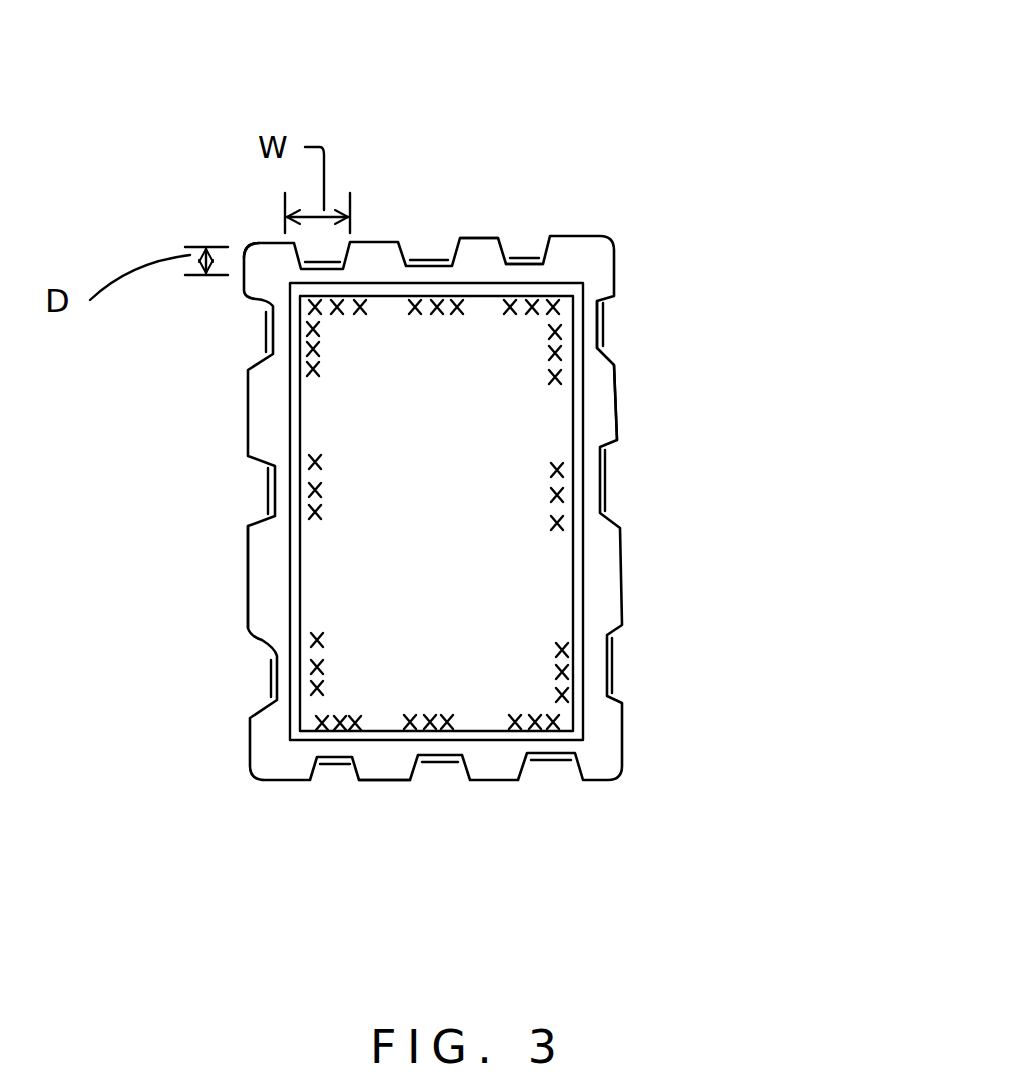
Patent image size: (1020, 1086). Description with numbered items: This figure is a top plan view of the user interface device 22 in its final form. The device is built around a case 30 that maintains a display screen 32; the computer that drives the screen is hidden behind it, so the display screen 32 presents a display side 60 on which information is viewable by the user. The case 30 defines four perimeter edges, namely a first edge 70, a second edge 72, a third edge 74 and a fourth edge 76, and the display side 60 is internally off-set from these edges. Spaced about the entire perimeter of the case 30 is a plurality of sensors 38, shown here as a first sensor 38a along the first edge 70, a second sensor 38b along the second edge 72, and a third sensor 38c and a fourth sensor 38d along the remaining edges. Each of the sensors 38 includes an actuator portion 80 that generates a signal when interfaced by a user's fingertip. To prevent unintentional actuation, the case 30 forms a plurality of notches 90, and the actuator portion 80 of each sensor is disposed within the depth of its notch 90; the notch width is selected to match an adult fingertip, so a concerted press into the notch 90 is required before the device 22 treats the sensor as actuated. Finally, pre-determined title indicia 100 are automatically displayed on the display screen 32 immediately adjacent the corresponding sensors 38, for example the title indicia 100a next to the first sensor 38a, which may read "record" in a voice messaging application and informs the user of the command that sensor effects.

The user interface device 22 is at (462, 27).
The case 30 is at (628, 266).
The display screen 32 is at (480, 497).
The sensors 38 is at (528, 207).
The first sensor 38a is at (478, 163).
The second sensor 38b is at (618, 487).
The third sensor 38c is at (432, 783).
The fourth sensor 38d is at (252, 492).
The display side 60 is at (473, 625).
The first edge 70 is at (478, 228).
The second edge 72 is at (625, 385).
The third edge 74 is at (381, 790).
The fourth edge 76 is at (240, 612).
The actuator portion 80 is at (533, 253).
The notch 90 is at (262, 240).
The pre-determined title indicia 100 is at (333, 497).
The pre-determined title indicia 100a is at (436, 318).